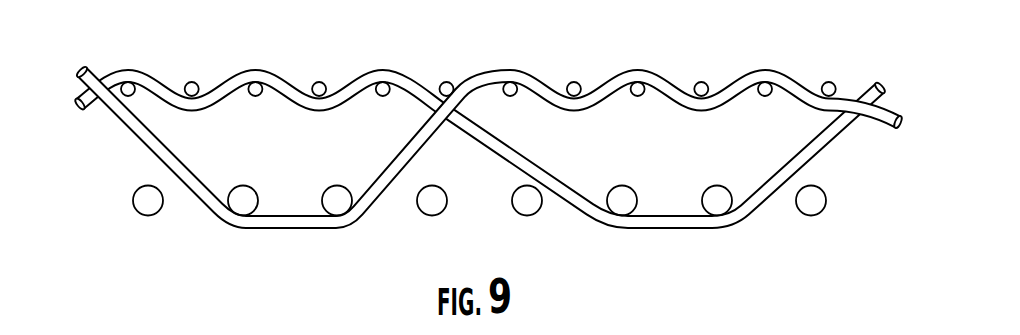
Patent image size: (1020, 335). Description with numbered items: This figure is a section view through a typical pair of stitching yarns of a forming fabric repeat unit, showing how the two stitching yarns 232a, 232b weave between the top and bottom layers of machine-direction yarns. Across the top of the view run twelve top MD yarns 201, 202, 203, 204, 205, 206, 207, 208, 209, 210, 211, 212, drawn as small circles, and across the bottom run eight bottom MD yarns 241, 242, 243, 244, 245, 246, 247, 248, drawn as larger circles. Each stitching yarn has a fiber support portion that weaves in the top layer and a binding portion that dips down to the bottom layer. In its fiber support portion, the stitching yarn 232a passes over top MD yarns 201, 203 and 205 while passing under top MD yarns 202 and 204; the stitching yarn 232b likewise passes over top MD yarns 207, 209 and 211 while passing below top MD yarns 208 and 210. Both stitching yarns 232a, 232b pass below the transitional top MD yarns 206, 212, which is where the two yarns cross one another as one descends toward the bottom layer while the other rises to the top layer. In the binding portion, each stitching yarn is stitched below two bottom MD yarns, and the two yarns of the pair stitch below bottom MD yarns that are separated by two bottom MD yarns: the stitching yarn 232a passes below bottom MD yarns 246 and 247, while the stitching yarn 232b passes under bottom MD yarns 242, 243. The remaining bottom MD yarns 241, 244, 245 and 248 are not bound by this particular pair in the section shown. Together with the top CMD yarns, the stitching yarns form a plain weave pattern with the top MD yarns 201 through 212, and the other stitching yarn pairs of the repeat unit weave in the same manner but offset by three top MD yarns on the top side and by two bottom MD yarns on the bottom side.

The top MD yarn 201 is at (128, 88).
The top MD yarn 202 is at (192, 88).
The top MD yarn 203 is at (255, 88).
The top MD yarn 204 is at (319, 88).
The top MD yarn 205 is at (383, 88).
The transitional top MD yarn 206 is at (446, 88).
The top MD yarn 207 is at (510, 88).
The top MD yarn 208 is at (574, 88).
The top MD yarn 209 is at (638, 88).
The top MD yarn 210 is at (701, 88).
The top MD yarn 211 is at (765, 88).
The transitional top MD yarn 212 is at (829, 88).
The bottom MD yarn 241 is at (148, 204).
The bottom MD yarn 242 is at (243, 204).
The bottom MD yarn 243 is at (337, 204).
The bottom MD yarn 244 is at (432, 204).
The bottom MD yarn 245 is at (527, 204).
The bottom MD yarn 246 is at (622, 204).
The bottom MD yarn 247 is at (717, 204).
The bottom MD yarn 248 is at (811, 204).
The stitching yarn 232a is at (109, 80).
The stitching yarn 232b is at (848, 97).